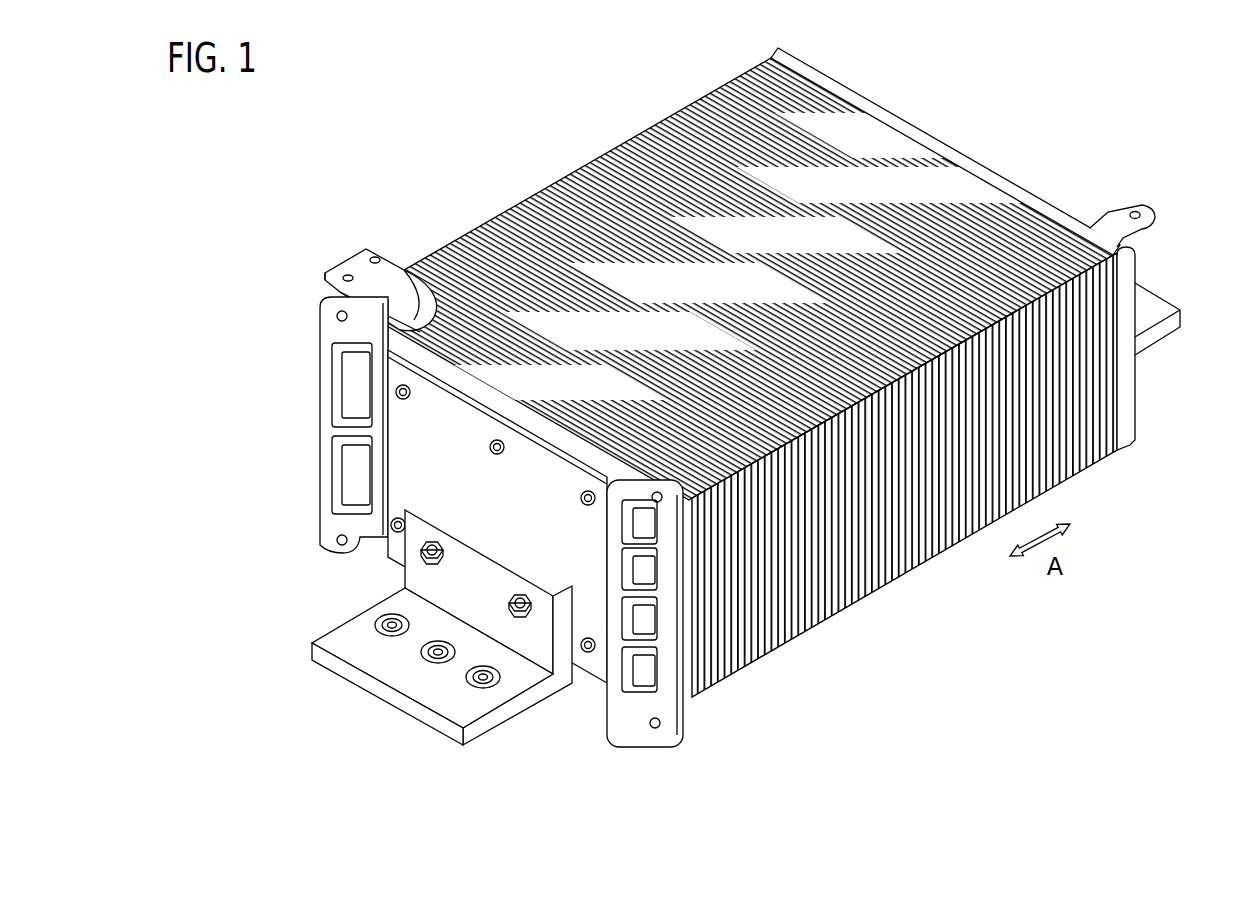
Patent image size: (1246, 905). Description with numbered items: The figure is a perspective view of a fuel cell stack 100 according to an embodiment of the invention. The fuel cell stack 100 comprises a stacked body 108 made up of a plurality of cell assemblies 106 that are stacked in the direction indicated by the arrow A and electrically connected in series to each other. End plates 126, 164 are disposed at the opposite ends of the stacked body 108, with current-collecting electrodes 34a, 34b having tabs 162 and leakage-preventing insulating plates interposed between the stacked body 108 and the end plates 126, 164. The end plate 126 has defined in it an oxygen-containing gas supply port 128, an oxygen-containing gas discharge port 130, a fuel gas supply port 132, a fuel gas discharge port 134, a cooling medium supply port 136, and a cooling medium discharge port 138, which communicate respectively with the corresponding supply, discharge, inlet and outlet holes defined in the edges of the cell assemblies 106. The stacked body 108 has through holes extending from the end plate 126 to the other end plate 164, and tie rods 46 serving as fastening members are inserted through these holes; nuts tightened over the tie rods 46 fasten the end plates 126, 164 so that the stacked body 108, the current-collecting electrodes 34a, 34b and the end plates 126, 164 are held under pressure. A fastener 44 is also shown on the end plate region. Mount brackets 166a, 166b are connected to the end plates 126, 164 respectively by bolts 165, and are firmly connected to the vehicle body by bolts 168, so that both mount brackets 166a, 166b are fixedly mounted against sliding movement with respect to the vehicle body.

The fuel cell stack 100 is at (500, 54).
The cell assembly 106 is at (456, 238).
The stacked body 108 is at (930, 564).
The end plate 164 is at (977, 167).
The tab 162 is at (1121, 216).
The current-collecting electrode 34a is at (647, 615).
The current-collecting electrode 34b is at (1122, 460).
The end plate 126 is at (308, 425).
The fuel gas supply port 132 is at (347, 397).
The fuel gas discharge port 134 is at (350, 486).
The oxygen-containing gas supply port 128 is at (635, 520).
The cooling medium supply port 136 is at (635, 571).
The cooling medium discharge port 138 is at (632, 642).
The oxygen-containing gas discharge port 130 is at (649, 690).
The nut 44 is at (504, 455).
The tie rod 46 is at (411, 399).
The bolt 165 is at (436, 542).
The mount bracket 166a is at (442, 610).
The mount bracket 166b is at (1170, 330).
The bolt 168 is at (380, 622).